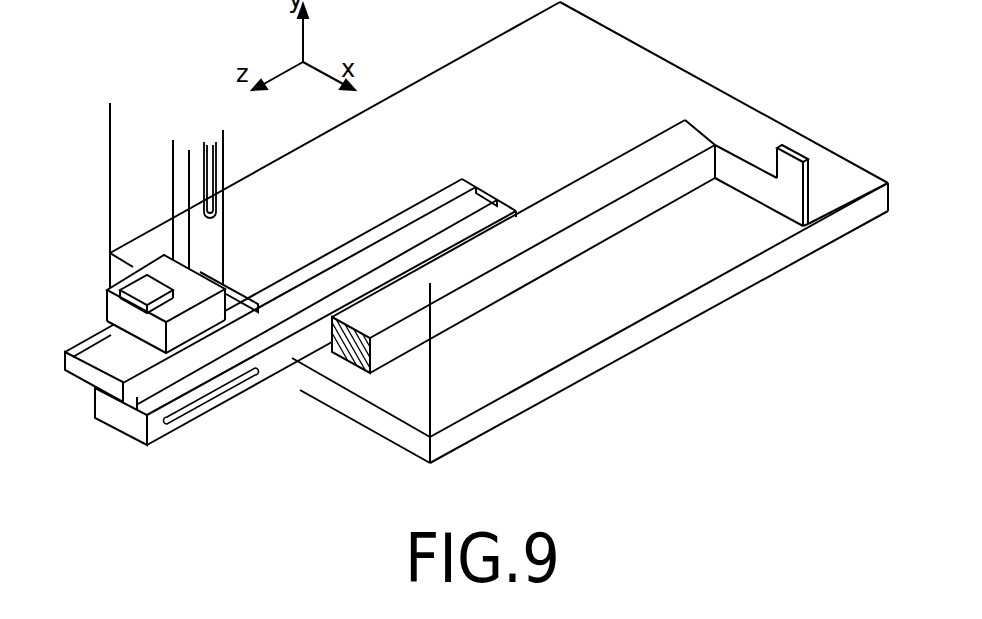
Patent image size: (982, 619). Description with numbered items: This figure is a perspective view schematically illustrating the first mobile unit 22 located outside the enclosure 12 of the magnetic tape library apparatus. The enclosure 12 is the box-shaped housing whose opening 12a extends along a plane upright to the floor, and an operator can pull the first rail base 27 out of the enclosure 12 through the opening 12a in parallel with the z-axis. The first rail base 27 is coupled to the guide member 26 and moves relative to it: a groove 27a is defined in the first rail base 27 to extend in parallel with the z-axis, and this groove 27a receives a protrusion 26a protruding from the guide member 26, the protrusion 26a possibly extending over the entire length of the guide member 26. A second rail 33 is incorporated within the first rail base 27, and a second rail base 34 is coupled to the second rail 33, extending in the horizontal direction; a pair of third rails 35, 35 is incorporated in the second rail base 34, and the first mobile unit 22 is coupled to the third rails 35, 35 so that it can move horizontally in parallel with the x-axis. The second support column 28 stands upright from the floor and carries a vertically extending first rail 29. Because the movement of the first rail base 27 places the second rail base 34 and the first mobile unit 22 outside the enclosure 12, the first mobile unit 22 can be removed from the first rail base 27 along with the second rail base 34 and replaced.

The enclosure 12 is at (606, 353).
The opening 12a is at (432, 441).
The first mobile unit 22 is at (208, 287).
The guide member 26 is at (467, 302).
The protrusion 26a is at (331, 320).
The first rail base 27 is at (138, 436).
The groove 27a is at (197, 407).
The second support column 28 is at (218, 220).
The first rail 29 is at (203, 197).
The second rail 33 is at (383, 251).
The second rail base 34 is at (88, 383).
The third rail 35 is at (100, 340).